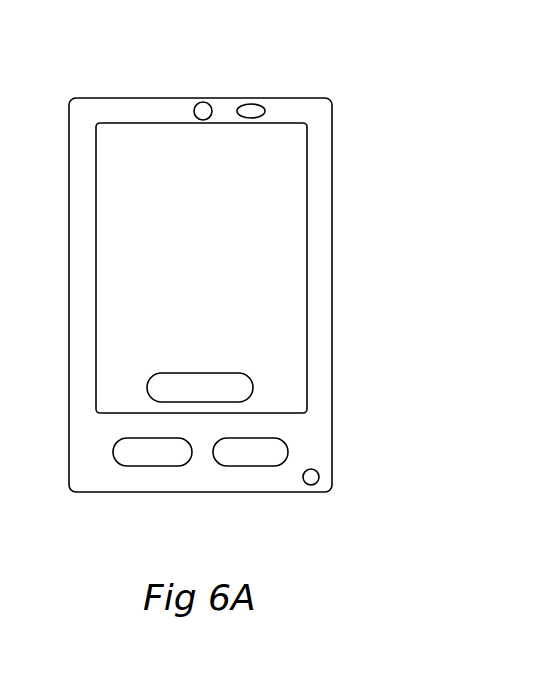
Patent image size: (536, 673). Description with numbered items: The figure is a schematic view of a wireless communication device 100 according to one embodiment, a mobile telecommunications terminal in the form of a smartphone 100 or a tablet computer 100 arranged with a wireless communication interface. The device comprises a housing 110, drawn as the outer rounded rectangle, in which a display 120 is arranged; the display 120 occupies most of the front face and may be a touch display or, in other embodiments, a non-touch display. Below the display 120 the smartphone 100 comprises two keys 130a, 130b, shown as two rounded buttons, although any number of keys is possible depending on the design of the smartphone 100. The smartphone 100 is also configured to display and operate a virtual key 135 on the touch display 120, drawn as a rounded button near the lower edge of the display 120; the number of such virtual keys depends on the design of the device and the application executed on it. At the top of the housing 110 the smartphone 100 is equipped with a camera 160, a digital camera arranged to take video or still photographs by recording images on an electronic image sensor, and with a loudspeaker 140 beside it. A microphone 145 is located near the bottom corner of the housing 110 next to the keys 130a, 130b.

The wireless communication device 100 is at (92, 90).
The housing 110 is at (332, 205).
The display 120 is at (293, 271).
The virtual key 135 is at (253, 388).
The key 130a is at (138, 466).
The key 130b is at (288, 455).
The microphone 145 is at (319, 481).
The camera 160 is at (203, 101).
The loudspeaker 140 is at (252, 103).